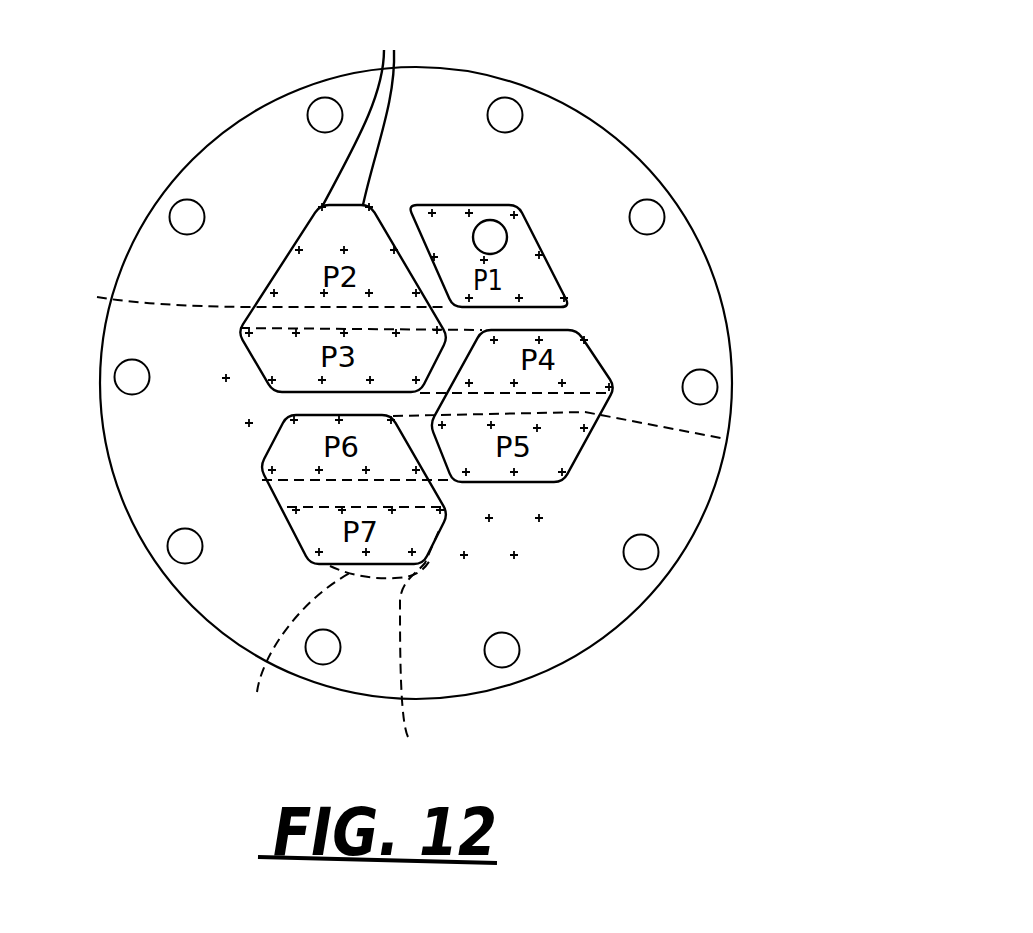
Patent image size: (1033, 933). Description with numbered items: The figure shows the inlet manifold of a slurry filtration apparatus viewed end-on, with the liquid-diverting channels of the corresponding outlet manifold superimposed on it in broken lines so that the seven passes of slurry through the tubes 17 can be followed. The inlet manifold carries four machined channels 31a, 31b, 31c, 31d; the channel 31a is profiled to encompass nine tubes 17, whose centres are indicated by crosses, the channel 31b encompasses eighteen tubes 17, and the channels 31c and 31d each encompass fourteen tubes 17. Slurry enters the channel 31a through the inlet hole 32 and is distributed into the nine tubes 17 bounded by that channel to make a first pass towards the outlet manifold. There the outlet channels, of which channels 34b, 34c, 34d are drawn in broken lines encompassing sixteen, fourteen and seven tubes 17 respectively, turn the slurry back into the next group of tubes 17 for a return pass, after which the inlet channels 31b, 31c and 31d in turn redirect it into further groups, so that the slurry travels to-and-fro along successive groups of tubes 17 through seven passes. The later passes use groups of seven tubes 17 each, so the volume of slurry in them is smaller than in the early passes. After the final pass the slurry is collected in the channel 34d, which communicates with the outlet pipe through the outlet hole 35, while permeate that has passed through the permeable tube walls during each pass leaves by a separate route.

The tubes 17 is at (361, 109).
The inlet hole 32 is at (491, 234).
The channel 31a is at (543, 243).
The channel 31b is at (295, 230).
The channel 31c is at (603, 362).
The channel 31d is at (260, 453).
The channel 34b is at (241, 286).
The channel 34c is at (587, 436).
The channel 34d is at (321, 636).
The outlet hole 35 is at (420, 645).